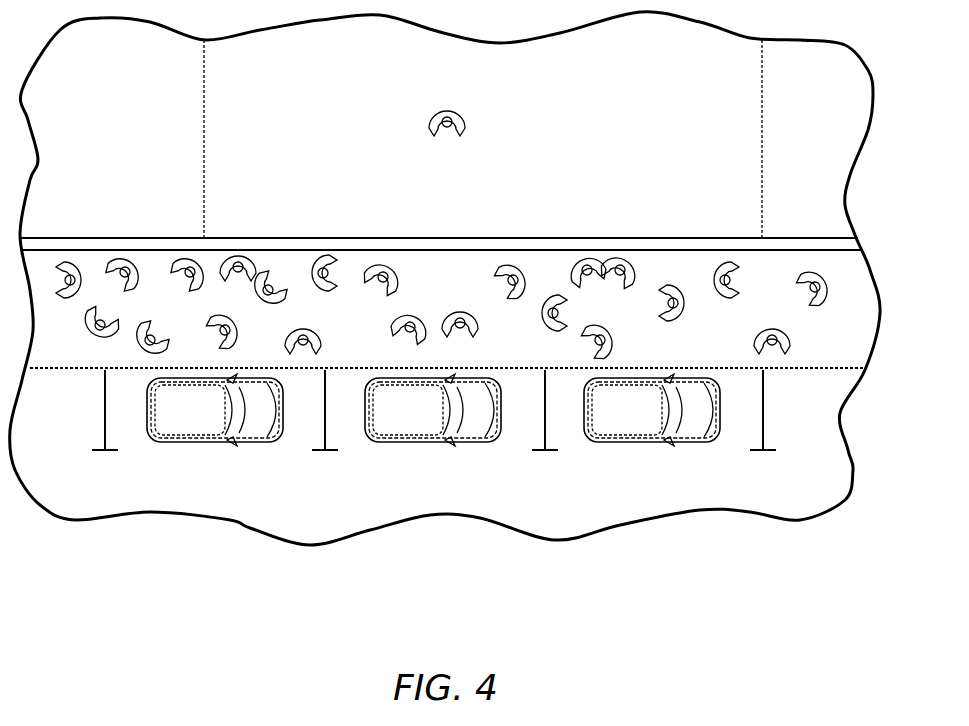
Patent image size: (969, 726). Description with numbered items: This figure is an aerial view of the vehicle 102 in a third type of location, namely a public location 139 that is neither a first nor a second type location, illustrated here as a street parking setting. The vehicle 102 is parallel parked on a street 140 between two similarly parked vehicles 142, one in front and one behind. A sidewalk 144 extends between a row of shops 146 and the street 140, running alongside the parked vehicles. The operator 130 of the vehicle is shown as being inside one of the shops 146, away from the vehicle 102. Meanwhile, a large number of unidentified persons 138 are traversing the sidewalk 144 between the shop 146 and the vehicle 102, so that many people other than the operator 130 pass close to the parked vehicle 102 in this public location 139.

The vehicle 102 is at (394, 422).
The operator 130 is at (432, 116).
The unidentified persons 138 is at (150, 326).
The public location 139 is at (395, 491).
The street 140 is at (628, 484).
The parked vehicles 142 is at (176, 422).
The sidewalk 144 is at (820, 336).
The shops 146 is at (575, 129).